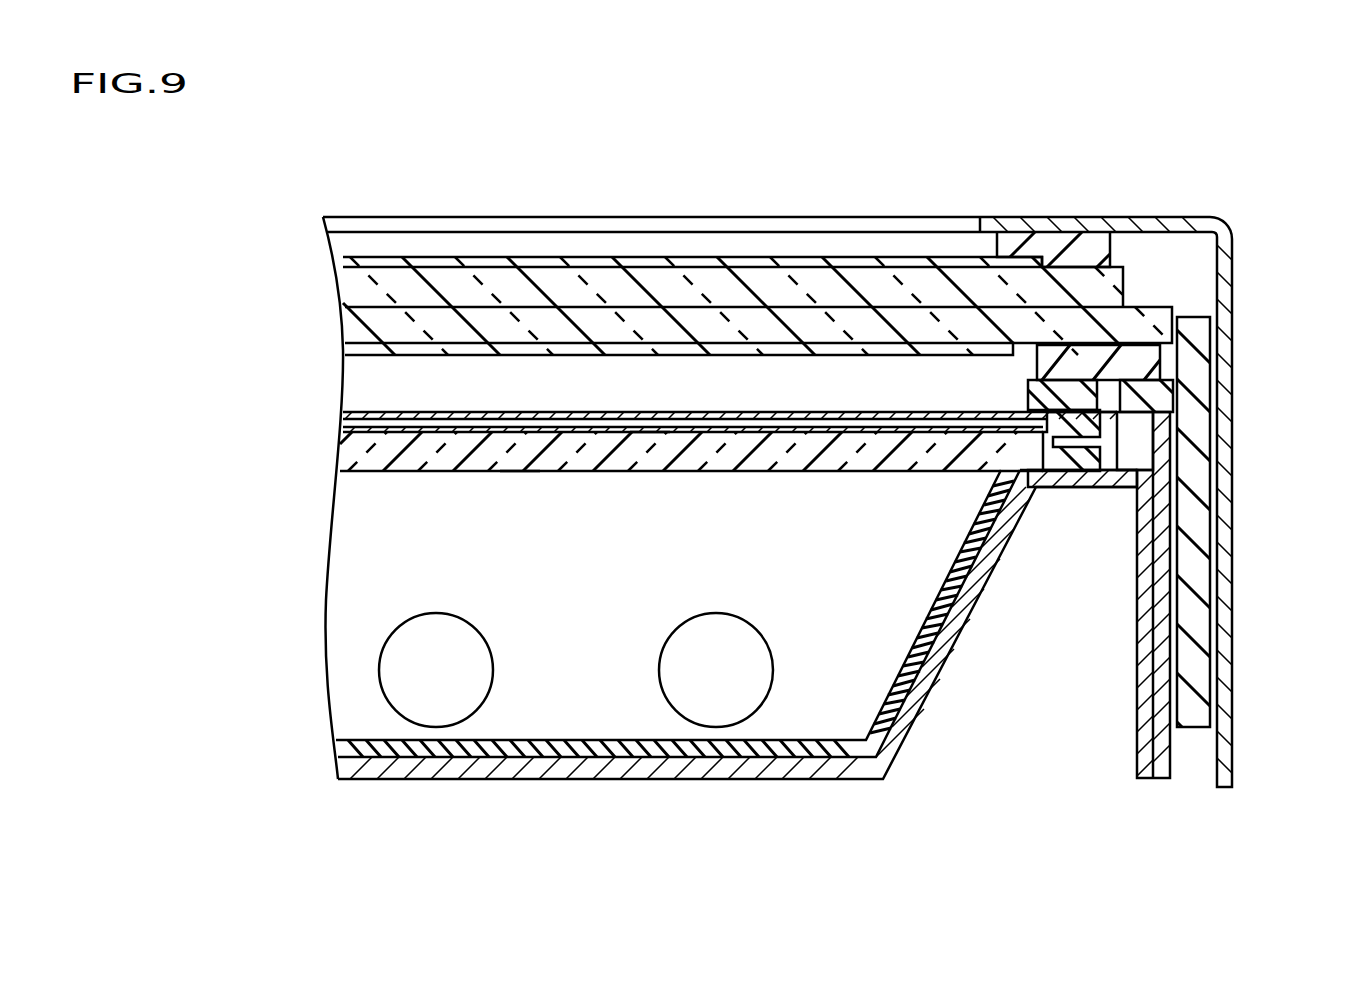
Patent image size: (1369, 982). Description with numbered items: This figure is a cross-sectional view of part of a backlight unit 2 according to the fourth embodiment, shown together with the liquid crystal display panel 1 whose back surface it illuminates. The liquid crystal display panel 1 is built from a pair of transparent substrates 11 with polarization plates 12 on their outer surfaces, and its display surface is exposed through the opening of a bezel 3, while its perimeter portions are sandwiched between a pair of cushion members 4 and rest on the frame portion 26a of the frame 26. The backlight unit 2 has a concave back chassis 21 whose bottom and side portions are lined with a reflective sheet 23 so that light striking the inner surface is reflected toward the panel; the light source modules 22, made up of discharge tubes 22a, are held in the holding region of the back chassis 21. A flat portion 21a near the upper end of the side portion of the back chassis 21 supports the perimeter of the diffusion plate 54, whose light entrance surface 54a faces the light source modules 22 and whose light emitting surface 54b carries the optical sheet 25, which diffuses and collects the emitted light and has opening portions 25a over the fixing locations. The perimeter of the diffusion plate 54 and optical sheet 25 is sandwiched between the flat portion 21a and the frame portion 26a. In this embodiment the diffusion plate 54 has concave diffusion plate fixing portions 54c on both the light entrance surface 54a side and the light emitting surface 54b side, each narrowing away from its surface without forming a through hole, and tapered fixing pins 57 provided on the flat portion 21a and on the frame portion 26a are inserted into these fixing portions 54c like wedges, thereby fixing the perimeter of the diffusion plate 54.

The liquid crystal display panel 1 is at (682, 299).
The backlight unit 2 is at (759, 510).
The bezel 3 is at (1220, 230).
The cushion member 4 is at (1042, 242).
The transparent substrate 11 is at (348, 288).
The polarization plate 12 is at (348, 260).
The back chassis 21 is at (352, 772).
The flat portion 21a is at (1128, 472).
The light source module 22 is at (358, 657).
The discharge tube 22a is at (438, 637).
The reflective sheet 23 is at (350, 746).
The optical sheet 25 is at (348, 413).
The opening portion 25a is at (1070, 410).
The frame 26 is at (1195, 385).
The frame portion 26a is at (1120, 402).
The diffusion plate 54 is at (674, 496).
The light entrance surface 54a is at (518, 472).
The light emitting surface 54b is at (653, 433).
The diffusion plate fixing portion 54c is at (1040, 412).
The fixing pin 57 is at (1033, 388).